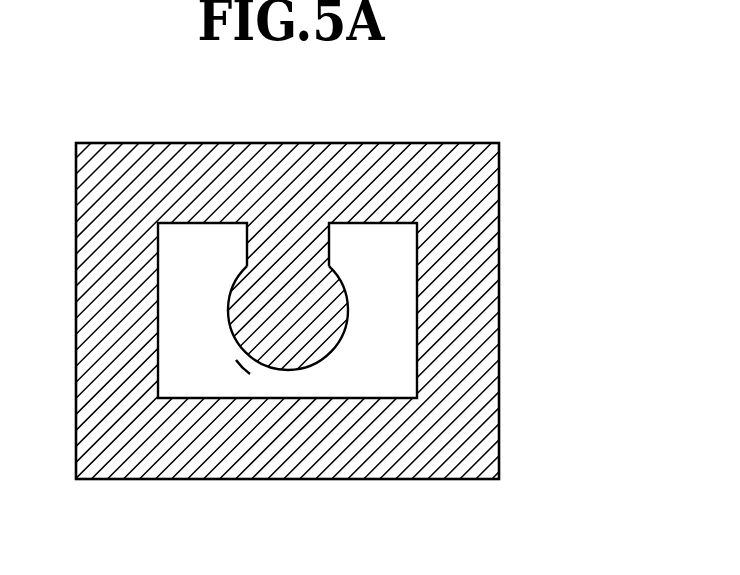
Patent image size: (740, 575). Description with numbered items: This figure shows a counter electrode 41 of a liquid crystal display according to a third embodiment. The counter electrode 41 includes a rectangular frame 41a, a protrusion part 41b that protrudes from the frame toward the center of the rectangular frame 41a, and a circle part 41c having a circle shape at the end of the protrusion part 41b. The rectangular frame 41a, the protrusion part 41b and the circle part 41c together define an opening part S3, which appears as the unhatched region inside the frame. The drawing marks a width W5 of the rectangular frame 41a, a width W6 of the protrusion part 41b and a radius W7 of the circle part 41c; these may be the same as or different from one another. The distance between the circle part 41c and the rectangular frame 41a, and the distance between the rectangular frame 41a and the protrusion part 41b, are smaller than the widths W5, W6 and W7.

The counter electrode 41 is at (513, 196).
The rectangular frame 41a is at (499, 412).
The protrusion part 41b is at (298, 223).
The circle part 41c is at (315, 303).
The width of the rectangular frame W5 is at (158, 330).
The width of the protrusion part W6 is at (329, 254).
The radius of the circle part W7 is at (288, 313).
The opening part S3 is at (240, 357).